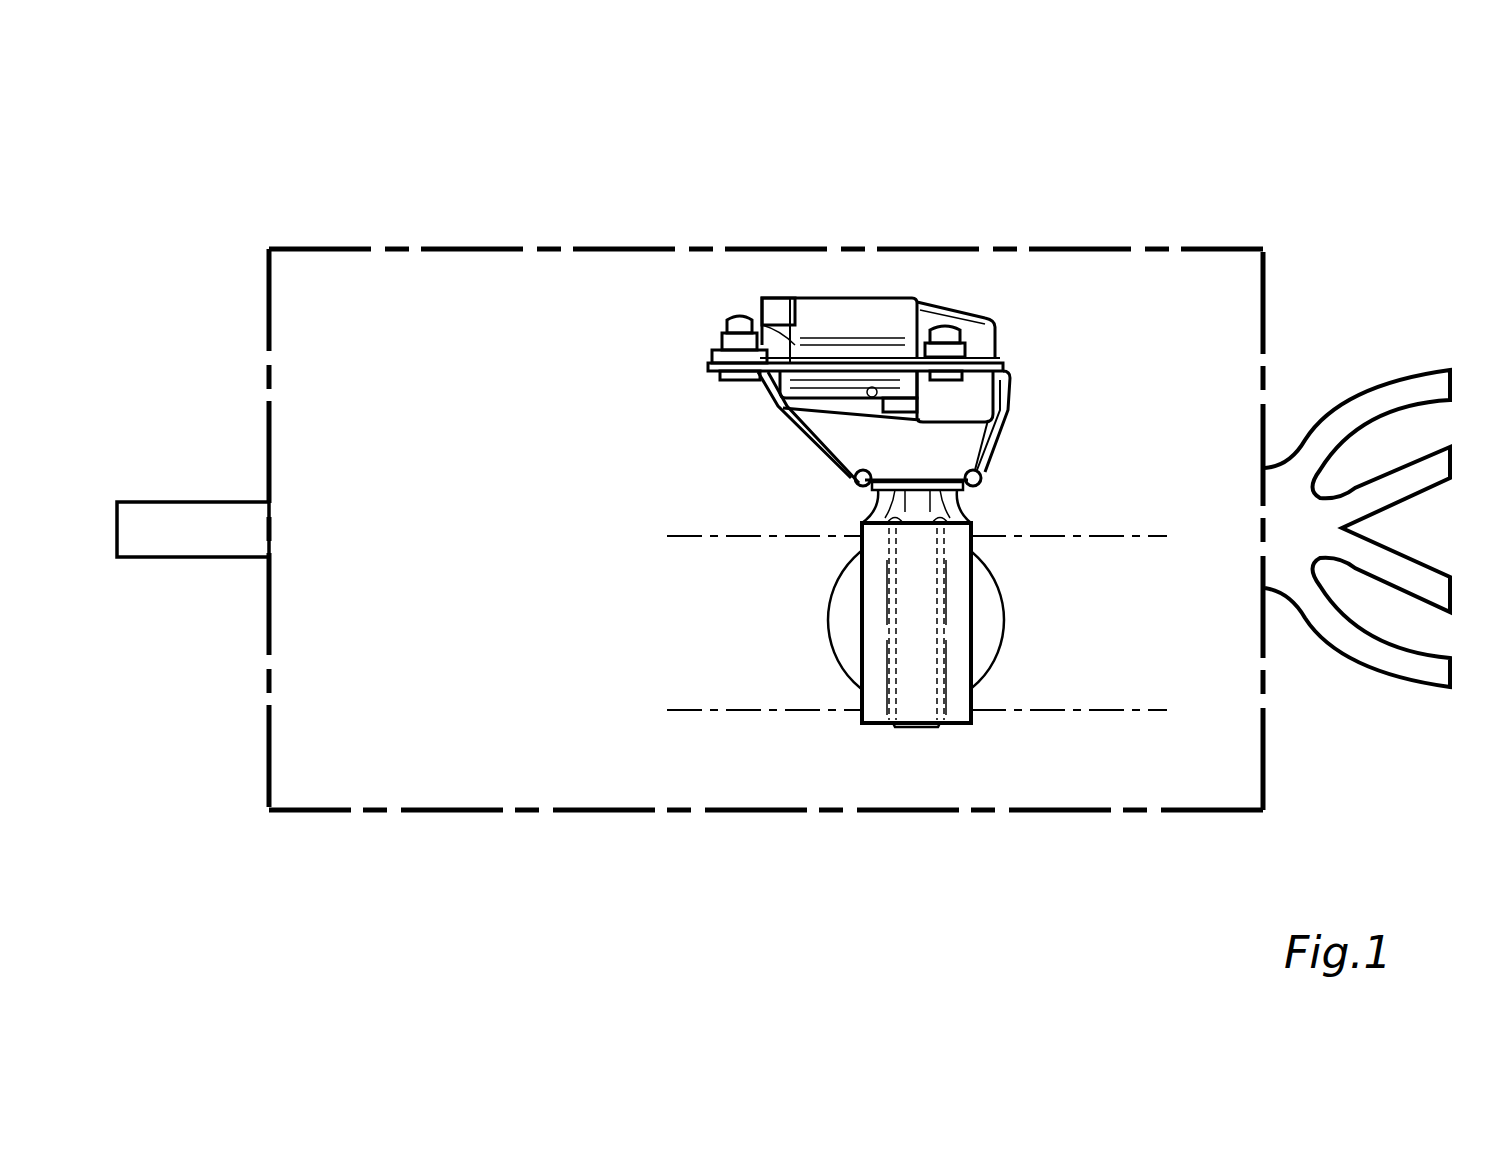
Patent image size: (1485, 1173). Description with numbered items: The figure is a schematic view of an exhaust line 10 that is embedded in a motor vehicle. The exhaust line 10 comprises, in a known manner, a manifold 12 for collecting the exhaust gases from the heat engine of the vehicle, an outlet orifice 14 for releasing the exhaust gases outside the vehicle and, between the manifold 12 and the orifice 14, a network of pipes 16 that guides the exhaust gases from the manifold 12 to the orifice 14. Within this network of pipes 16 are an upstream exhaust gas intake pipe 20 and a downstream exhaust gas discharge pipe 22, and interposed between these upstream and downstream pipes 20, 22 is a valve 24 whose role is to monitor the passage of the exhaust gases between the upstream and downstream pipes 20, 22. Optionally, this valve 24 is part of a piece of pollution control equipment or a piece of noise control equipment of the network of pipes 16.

The exhaust line 10 is at (245, 223).
The manifold 12 is at (1425, 346).
The outlet orifice 14 is at (198, 526).
The network of pipes 16 is at (1053, 248).
The upstream exhaust gas intake pipe 20 is at (1088, 672).
The downstream exhaust gas discharge pipe 22 is at (745, 672).
The valve 24 is at (917, 745).